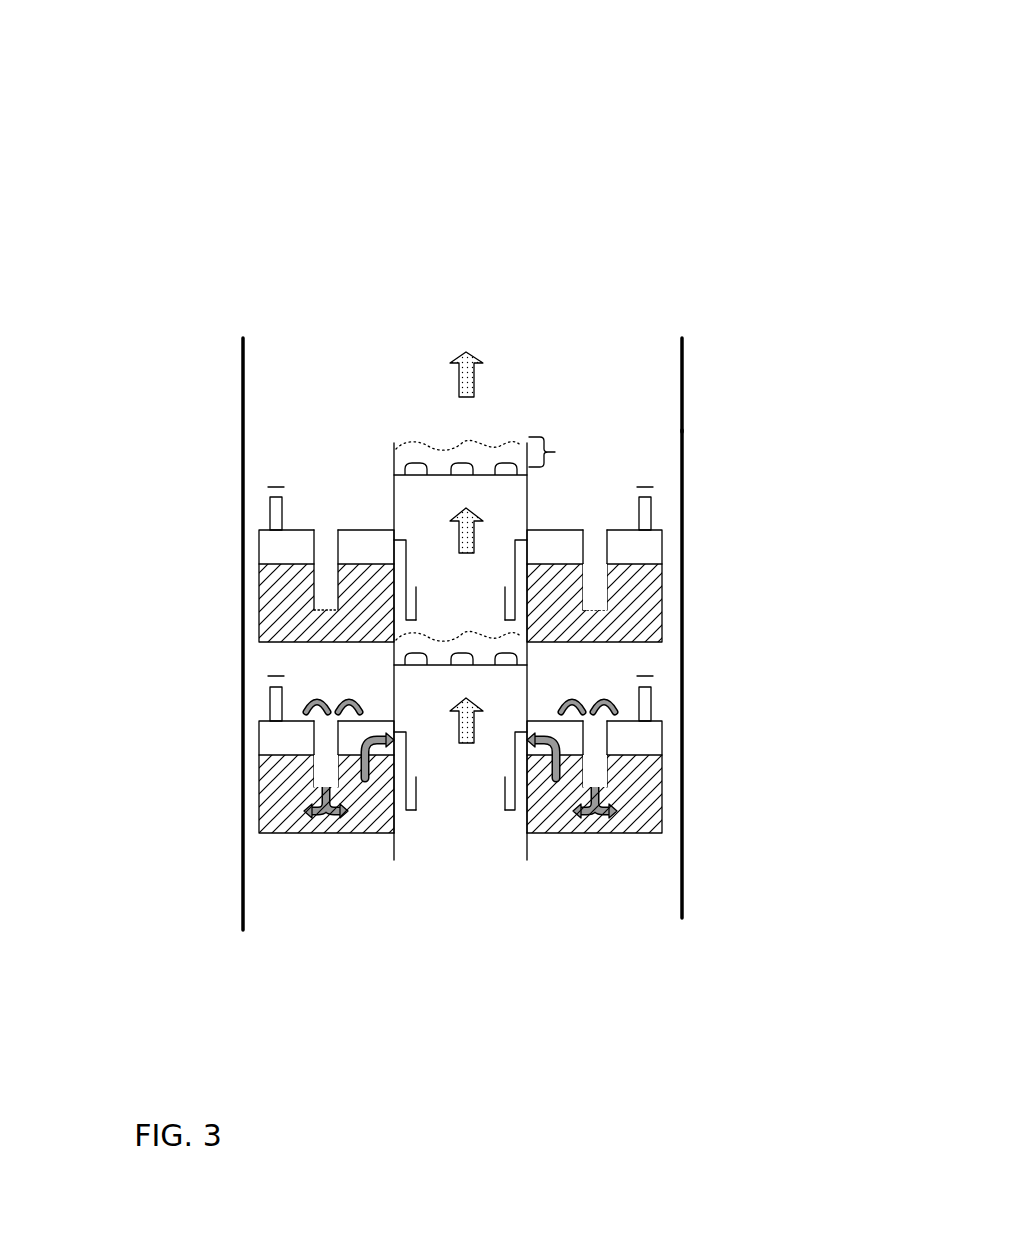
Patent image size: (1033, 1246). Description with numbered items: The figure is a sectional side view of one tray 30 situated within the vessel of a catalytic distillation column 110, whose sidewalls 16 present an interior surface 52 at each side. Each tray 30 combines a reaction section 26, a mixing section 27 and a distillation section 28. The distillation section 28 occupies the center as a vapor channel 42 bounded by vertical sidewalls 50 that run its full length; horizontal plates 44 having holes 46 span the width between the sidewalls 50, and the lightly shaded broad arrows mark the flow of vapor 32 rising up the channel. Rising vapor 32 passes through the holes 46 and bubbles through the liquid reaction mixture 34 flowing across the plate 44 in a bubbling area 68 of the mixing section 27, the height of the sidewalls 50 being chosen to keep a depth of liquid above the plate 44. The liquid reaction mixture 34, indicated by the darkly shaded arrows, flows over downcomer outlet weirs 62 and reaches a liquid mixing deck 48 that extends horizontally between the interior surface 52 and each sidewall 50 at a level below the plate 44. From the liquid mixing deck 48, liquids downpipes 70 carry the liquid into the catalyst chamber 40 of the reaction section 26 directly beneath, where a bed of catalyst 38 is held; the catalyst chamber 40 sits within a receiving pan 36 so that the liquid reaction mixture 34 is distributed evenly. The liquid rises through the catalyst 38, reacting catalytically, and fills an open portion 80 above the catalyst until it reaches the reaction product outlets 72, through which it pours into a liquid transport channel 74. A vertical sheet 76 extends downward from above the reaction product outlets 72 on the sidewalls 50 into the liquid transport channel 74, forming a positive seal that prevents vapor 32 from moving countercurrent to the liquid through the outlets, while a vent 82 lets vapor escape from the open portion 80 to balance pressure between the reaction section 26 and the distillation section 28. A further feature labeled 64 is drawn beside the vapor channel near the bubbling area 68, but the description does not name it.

The catalytic distillation column 110 is at (647, 115).
The sidewalls 16 is at (683, 432).
The reaction section 26 is at (650, 788).
The mixing section 27 is at (273, 487).
The distillation section 28 is at (500, 670).
The tray 30 is at (700, 637).
The vapor 32 is at (462, 352).
The liquid reaction mixture 34 is at (513, 448).
The receiving pan 36 is at (259, 820).
The catalyst 38 is at (550, 800).
The catalyst chamber 40 is at (665, 567).
The vapor channel 42 is at (463, 837).
The horizontal plate 44 is at (478, 670).
The holes 46 is at (463, 670).
The liquid mixing deck 48 is at (328, 533).
The vertical sidewalls 50 is at (344, 533).
The interior surface 52 is at (682, 413).
The downcomer outlet weir 62 is at (393, 483).
The sensor 64 is at (547, 440).
The bubbling area 68 is at (513, 300).
The liquids downpipe 70 is at (293, 520).
The reaction product outlets 72 is at (394, 550).
The liquid transport channel 74 is at (412, 603).
The vertical sheet 76 is at (408, 738).
The open portion 80 is at (640, 538).
The vent 82 is at (243, 338).